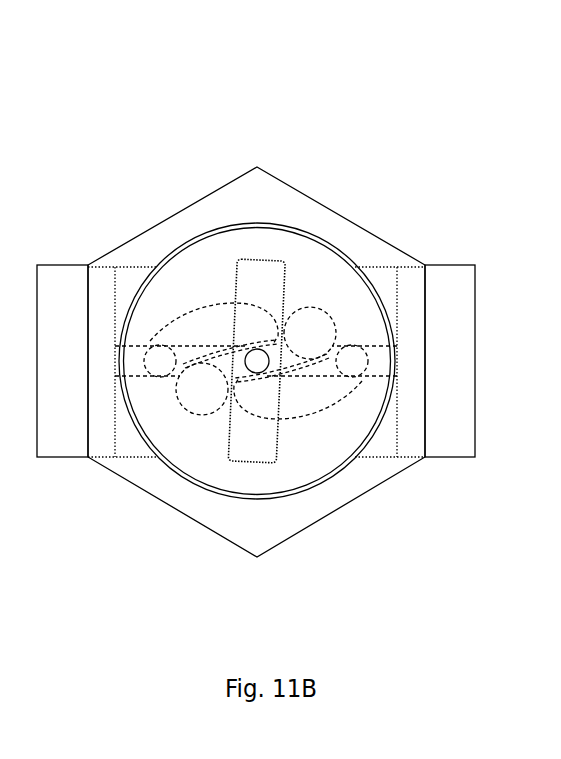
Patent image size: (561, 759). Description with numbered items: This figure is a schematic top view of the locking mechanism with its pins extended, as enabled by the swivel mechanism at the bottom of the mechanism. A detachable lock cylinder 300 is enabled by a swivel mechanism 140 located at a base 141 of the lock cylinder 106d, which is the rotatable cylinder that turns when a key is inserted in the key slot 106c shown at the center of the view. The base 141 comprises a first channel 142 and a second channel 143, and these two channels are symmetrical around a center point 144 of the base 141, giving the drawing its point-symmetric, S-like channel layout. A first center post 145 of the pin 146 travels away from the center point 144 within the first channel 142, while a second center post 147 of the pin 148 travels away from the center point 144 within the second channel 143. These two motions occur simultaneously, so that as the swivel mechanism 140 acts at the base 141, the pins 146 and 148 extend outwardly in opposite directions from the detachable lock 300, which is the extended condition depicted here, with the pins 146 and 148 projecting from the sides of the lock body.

The detachable lock cylinder 300 is at (156, 93).
The key slot 106c is at (272, 278).
The lock cylinder 106d is at (245, 247).
The swivel mechanism 140 is at (203, 392).
The base 141 is at (355, 440).
The first channel 142 is at (214, 335).
The second channel 143 is at (298, 363).
The center point 144 is at (256, 348).
The first center post 145 is at (161, 361).
The pin 146 is at (62, 361).
The second center post 147 is at (353, 360).
The pin 148 is at (450, 361).